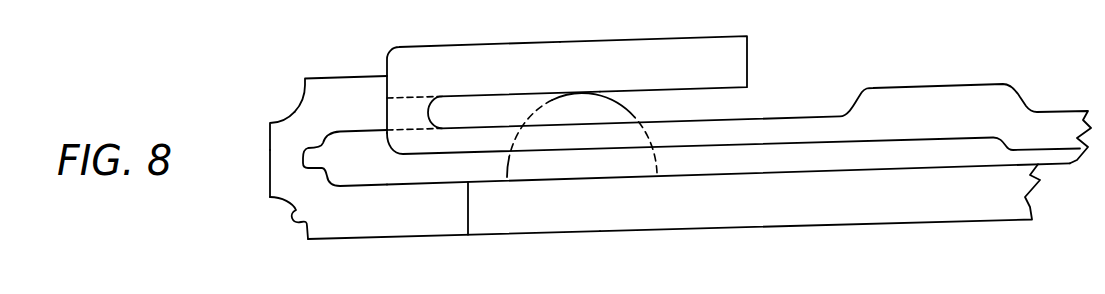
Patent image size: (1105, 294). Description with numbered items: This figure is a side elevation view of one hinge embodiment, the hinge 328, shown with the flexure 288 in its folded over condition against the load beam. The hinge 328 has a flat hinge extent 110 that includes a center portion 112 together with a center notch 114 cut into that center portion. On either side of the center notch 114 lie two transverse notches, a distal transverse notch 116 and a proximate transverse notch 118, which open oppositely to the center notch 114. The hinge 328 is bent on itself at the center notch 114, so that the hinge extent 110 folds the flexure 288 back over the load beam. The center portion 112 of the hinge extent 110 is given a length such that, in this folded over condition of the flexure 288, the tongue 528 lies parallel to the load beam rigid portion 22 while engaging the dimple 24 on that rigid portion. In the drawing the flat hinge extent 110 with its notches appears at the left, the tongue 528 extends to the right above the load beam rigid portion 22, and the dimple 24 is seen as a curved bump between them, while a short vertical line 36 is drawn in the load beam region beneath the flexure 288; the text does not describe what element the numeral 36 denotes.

The load beam rigid portion 22 is at (920, 212).
The dimple 24 is at (592, 162).
The slot 36 is at (487, 238).
The flat hinge extent 110 is at (337, 240).
The center portion 112 is at (281, 148).
The center notch 114 is at (305, 159).
The distal transverse notch 116 is at (300, 111).
The proximate transverse notch 118 is at (303, 222).
The flexure 288 is at (503, 45).
The hinge 328 is at (270, 120).
The tongue 528 is at (640, 46).